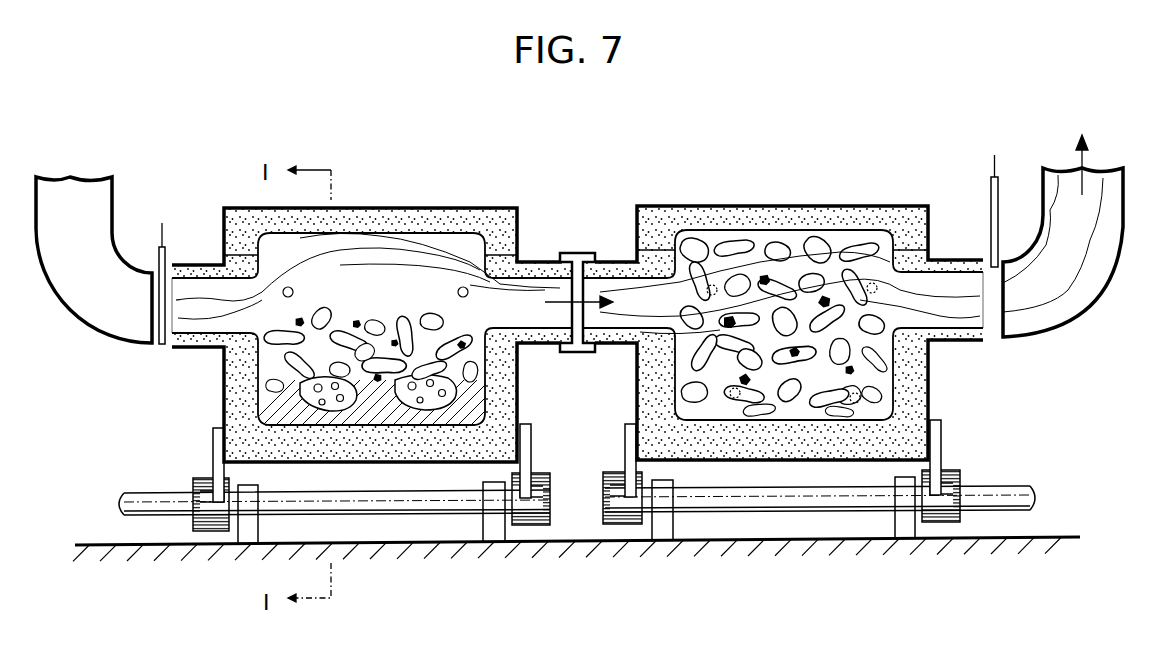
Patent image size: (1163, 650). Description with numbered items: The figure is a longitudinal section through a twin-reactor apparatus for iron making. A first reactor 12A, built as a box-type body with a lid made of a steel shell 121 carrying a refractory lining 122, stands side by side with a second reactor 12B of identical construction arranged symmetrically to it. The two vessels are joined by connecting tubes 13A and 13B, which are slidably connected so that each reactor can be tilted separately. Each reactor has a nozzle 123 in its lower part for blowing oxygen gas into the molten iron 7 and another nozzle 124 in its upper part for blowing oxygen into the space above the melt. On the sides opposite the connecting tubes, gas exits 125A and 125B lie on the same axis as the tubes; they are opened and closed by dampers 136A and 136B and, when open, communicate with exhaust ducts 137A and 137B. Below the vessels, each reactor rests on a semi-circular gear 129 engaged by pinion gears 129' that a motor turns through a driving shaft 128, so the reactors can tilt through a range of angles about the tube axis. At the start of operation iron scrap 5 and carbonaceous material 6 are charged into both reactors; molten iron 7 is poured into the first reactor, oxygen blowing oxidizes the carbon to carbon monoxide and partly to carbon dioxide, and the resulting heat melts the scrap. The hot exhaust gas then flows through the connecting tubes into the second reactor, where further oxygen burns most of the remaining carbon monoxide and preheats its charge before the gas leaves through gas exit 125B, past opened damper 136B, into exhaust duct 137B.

The iron scrap 5 is at (323, 315).
The carbonaceous material 6 is at (360, 323).
The molten iron 7 is at (395, 407).
The reactor 12A is at (345, 301).
The reactor 12B is at (822, 188).
The connecting tube 13A is at (535, 262).
The connecting tube 13B is at (617, 263).
The steel shell 121 is at (222, 372).
The refractory lining 122 is at (245, 398).
The nozzle 123 is at (342, 413).
The nozzle 124 is at (285, 288).
The gas exit 125A is at (203, 303).
The gas exit 125B is at (952, 292).
The driving shaft 128 is at (383, 500).
The semi-circular gear 129 is at (612, 459).
The pinion gear 129' is at (611, 491).
The damper 136A is at (157, 257).
The damper 136B is at (1000, 197).
The exhaust duct 137A is at (83, 285).
The exhaust duct 137B is at (1090, 275).